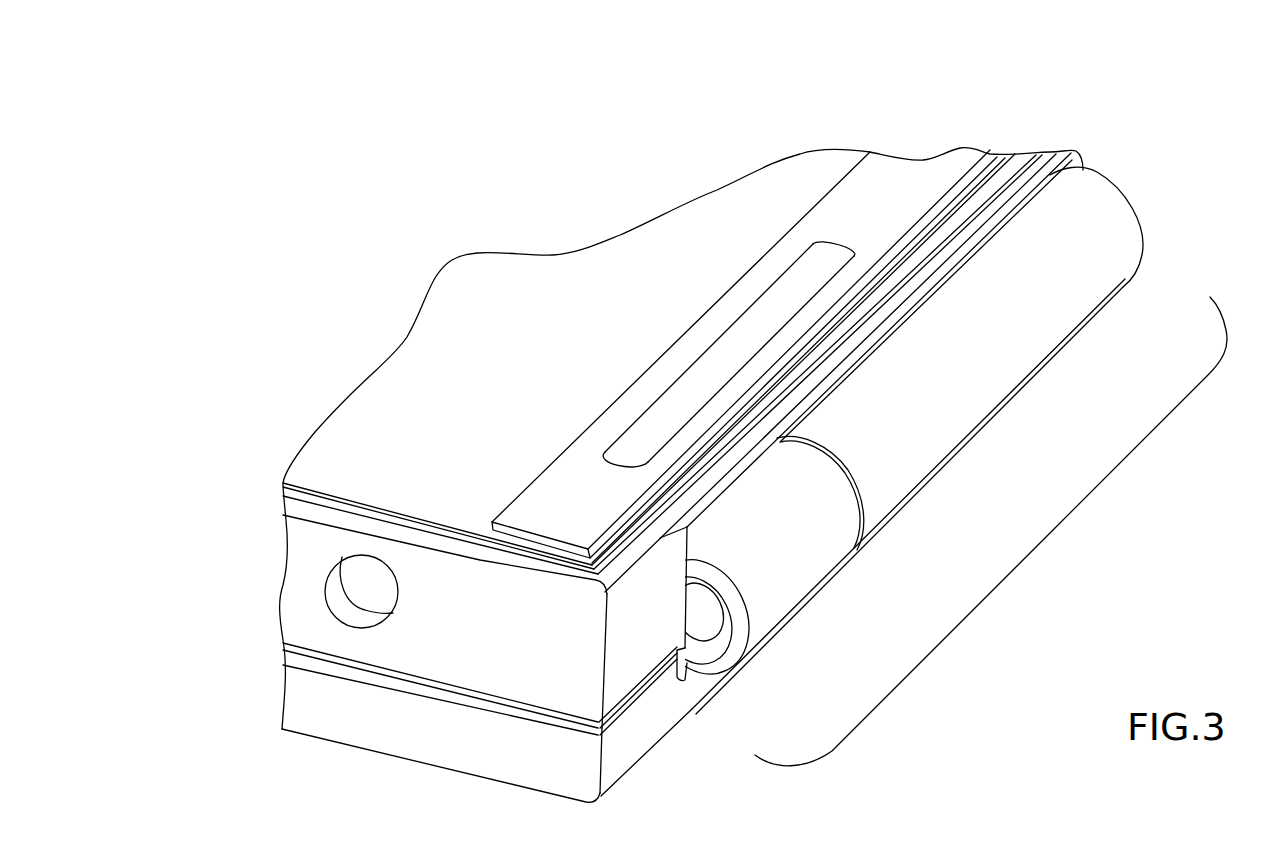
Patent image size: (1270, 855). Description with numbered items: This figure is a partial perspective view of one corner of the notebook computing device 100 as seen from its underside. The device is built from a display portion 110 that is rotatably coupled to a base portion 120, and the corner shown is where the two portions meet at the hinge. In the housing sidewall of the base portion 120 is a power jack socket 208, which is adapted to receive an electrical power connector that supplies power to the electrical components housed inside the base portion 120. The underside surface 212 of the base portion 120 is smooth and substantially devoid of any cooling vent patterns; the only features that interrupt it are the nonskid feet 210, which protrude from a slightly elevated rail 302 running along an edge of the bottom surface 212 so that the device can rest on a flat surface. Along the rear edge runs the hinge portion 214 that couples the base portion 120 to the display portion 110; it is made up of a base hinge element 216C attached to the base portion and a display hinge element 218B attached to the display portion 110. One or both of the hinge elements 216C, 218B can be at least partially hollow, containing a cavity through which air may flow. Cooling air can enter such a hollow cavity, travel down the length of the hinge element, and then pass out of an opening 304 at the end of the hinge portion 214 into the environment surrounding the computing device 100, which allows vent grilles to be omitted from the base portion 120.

The computing device 100 is at (613, 112).
The display portion 110 is at (527, 767).
The base portion 120 is at (458, 653).
The power jack socket 208 is at (325, 592).
The nonskid feet 210 is at (829, 258).
The underside surface 212 is at (445, 317).
The hinge portion 214 is at (1050, 533).
The base hinge element 216C is at (788, 583).
The display hinge element 218B is at (953, 420).
The rail 302 is at (932, 177).
The opening 304 is at (703, 627).